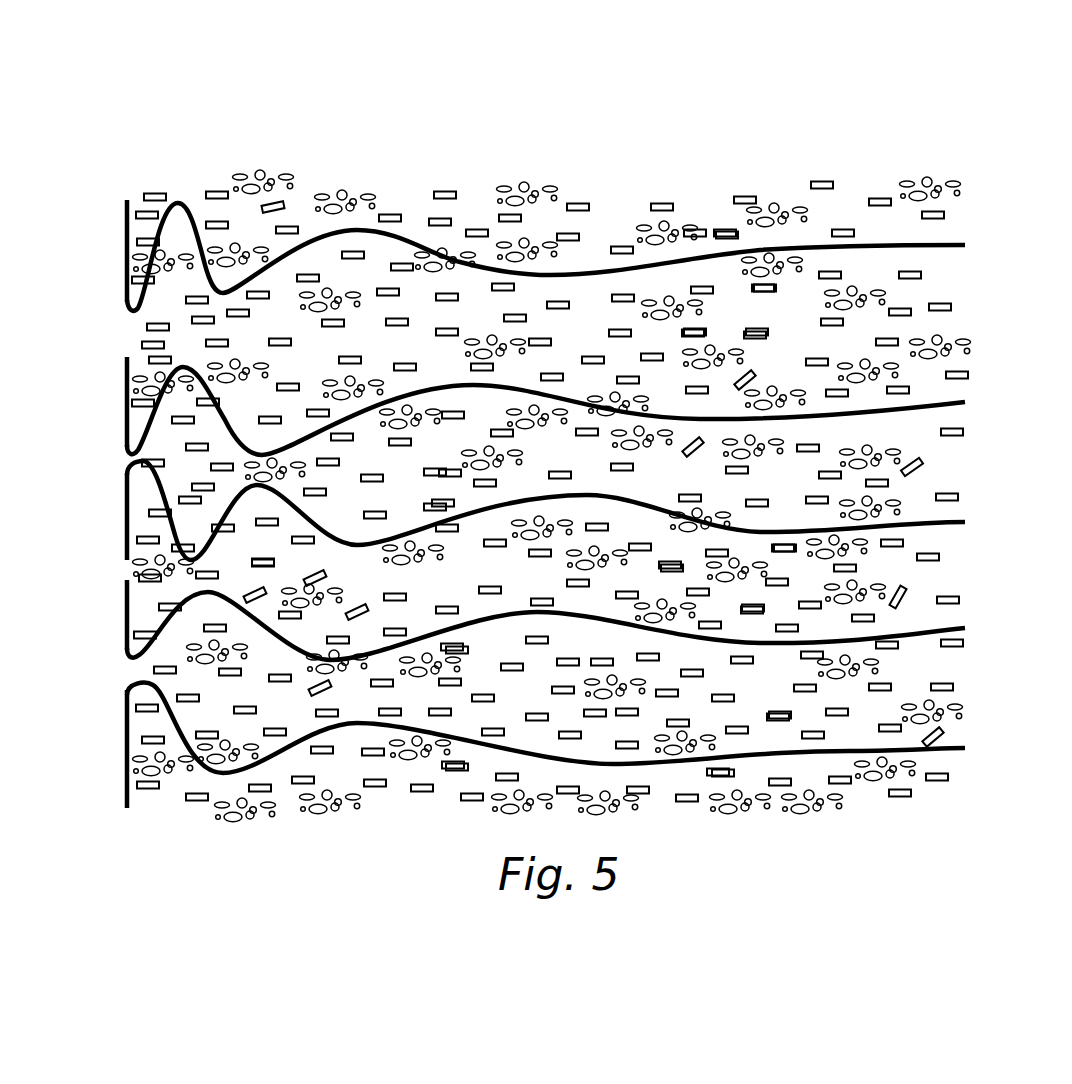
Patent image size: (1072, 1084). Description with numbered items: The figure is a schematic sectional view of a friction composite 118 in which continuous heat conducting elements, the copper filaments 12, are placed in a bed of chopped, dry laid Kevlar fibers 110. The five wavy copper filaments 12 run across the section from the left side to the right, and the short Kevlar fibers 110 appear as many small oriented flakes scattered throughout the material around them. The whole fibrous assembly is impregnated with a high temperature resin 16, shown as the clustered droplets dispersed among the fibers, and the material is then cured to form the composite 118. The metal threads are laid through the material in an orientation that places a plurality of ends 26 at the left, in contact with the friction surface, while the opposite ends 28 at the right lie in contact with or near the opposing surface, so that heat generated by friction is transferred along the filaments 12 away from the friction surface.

The copper filament 12 is at (405, 243).
The high temperature resin 16 is at (552, 186).
The ends 26 is at (125, 219).
The opposite ends 28 is at (965, 245).
The chopped, dry laid Kevlar fibers 110 is at (215, 190).
The composite 118 is at (684, 168).